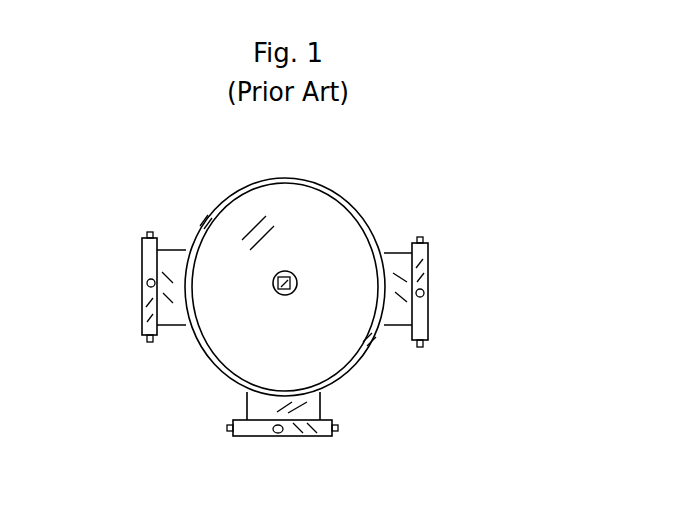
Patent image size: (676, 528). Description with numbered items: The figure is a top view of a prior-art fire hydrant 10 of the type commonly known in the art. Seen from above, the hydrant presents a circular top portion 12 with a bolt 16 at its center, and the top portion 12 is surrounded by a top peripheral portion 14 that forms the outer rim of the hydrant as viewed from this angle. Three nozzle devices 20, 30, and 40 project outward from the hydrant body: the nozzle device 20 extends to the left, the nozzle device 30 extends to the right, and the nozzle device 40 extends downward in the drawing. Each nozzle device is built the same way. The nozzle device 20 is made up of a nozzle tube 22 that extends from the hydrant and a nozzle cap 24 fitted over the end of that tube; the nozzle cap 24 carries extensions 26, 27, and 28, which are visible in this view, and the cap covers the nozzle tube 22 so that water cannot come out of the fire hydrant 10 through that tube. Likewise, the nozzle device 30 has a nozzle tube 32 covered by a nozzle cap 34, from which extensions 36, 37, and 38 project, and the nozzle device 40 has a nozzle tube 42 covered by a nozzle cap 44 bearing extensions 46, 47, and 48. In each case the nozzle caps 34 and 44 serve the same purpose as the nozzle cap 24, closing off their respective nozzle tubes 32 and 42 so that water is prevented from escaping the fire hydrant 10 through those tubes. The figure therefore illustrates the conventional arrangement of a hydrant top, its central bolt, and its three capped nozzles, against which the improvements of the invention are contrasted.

The fire hydrant 10 is at (358, 165).
The top portion 12 is at (284, 208).
The top peripheral portion 14 is at (352, 365).
The bolt 16 is at (294, 292).
The nozzle device 20 is at (178, 243).
The nozzle tube 22 is at (178, 315).
The nozzle cap 24 is at (147, 262).
The extension 26 is at (150, 232).
The extension 27 is at (148, 343).
The extension 28 is at (147, 285).
The nozzle device 30 is at (400, 247).
The nozzle tube 32 is at (400, 312).
The nozzle cap 34 is at (428, 258).
The extension 36 is at (423, 237).
The extension 37 is at (423, 347).
The extension 38 is at (427, 297).
The nozzle device 40 is at (240, 402).
The nozzle tube 42 is at (310, 410).
The nozzle cap 44 is at (307, 432).
The extension 46 is at (230, 430).
The extension 47 is at (337, 430).
The extension 48 is at (277, 432).